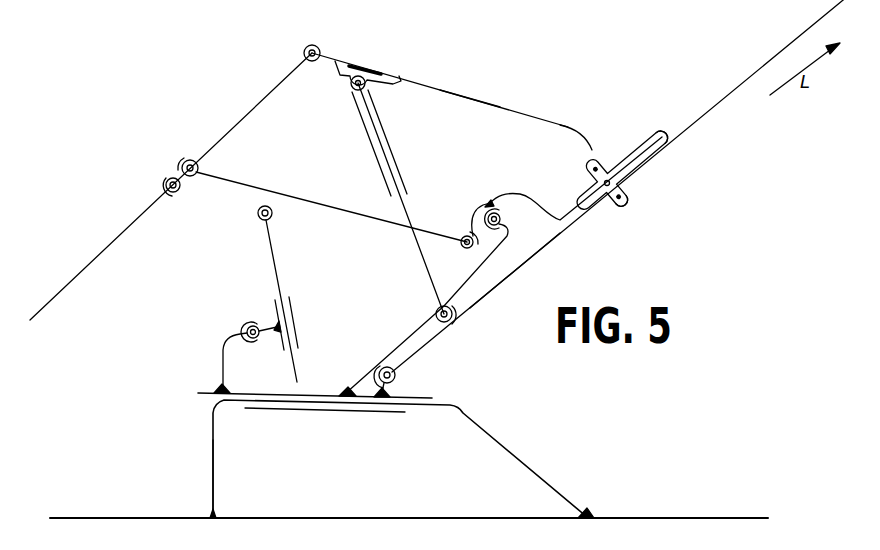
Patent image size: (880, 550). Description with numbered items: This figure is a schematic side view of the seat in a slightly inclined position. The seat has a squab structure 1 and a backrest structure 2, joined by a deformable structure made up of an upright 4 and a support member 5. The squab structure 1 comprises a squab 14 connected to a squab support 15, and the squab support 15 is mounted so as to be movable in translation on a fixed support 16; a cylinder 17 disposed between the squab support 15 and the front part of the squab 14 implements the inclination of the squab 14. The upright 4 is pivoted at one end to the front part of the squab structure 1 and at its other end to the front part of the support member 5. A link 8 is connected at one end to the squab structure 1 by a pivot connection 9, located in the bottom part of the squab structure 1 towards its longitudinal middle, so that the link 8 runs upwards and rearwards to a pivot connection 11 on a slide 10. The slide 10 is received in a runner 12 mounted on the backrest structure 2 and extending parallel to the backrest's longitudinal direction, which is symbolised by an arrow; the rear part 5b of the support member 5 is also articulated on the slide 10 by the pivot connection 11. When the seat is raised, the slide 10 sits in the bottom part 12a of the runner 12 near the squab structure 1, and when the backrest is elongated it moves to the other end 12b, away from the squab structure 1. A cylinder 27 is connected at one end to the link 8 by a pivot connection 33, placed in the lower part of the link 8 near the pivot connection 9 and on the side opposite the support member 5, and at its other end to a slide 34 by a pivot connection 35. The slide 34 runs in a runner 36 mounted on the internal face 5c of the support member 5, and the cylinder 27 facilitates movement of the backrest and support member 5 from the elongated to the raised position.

The squab structure 1 is at (528, 438).
The backrest structure 2 is at (740, 84).
The upright 4 is at (238, 118).
The support member 5 is at (504, 104).
The rear part of the support member 5b is at (588, 145).
The internal face of the support member 5c is at (480, 100).
The link 8 is at (544, 250).
The pivot connection 9 is at (397, 374).
The slide 10 is at (603, 162).
The pivot connection 11 is at (592, 174).
The runner 12 is at (640, 142).
The bottom part of the runner 12a is at (624, 198).
The other end of the runner 12b is at (667, 142).
The squab 14 is at (214, 178).
The squab support 15 is at (223, 362).
The fixed support 16 is at (213, 470).
The cylinder 17 is at (271, 256).
The cylinder 27 is at (403, 172).
The pivot connection 33 is at (436, 310).
The slide 34 is at (358, 62).
The pivot connection 35 is at (350, 87).
The runner 36 is at (392, 75).